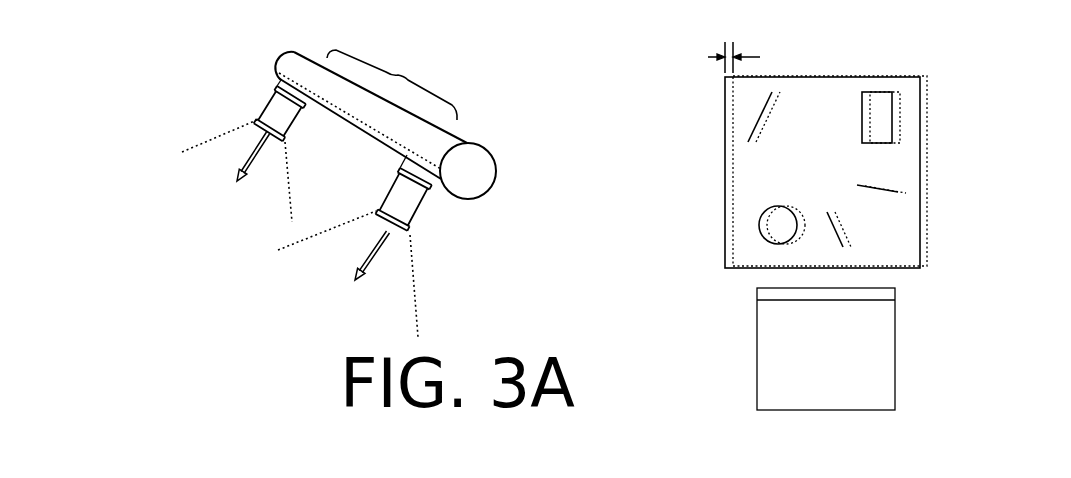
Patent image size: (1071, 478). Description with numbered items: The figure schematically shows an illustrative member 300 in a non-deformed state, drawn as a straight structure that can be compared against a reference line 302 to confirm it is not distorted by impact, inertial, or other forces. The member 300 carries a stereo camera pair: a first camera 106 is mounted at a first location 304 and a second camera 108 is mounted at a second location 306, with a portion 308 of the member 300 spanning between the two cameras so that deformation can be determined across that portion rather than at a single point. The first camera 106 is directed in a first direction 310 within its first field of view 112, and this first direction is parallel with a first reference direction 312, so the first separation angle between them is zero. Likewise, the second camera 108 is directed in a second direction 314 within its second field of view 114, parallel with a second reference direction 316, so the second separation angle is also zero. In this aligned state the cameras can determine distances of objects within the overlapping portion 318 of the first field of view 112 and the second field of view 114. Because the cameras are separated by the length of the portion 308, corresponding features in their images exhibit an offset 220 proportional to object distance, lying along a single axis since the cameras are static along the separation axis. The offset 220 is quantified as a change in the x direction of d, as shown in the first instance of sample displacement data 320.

The member 300 is at (283, 62).
The reference line 302 is at (407, 150).
The first location 304 is at (281, 77).
The second location 306 is at (441, 178).
The portion of the member 308 is at (402, 72).
The first camera 106 is at (275, 100).
The second camera 108 is at (416, 215).
The first field of view 112 is at (197, 142).
The second field of view 114 is at (297, 245).
The first direction 310 is at (238, 188).
The first reference direction 312 is at (237, 183).
The second direction 314 is at (354, 286).
The second reference direction 316 is at (355, 278).
The offset 220 is at (708, 57).
The overlapping portion 318 is at (697, 217).
The sample displacement data 320 is at (733, 352).